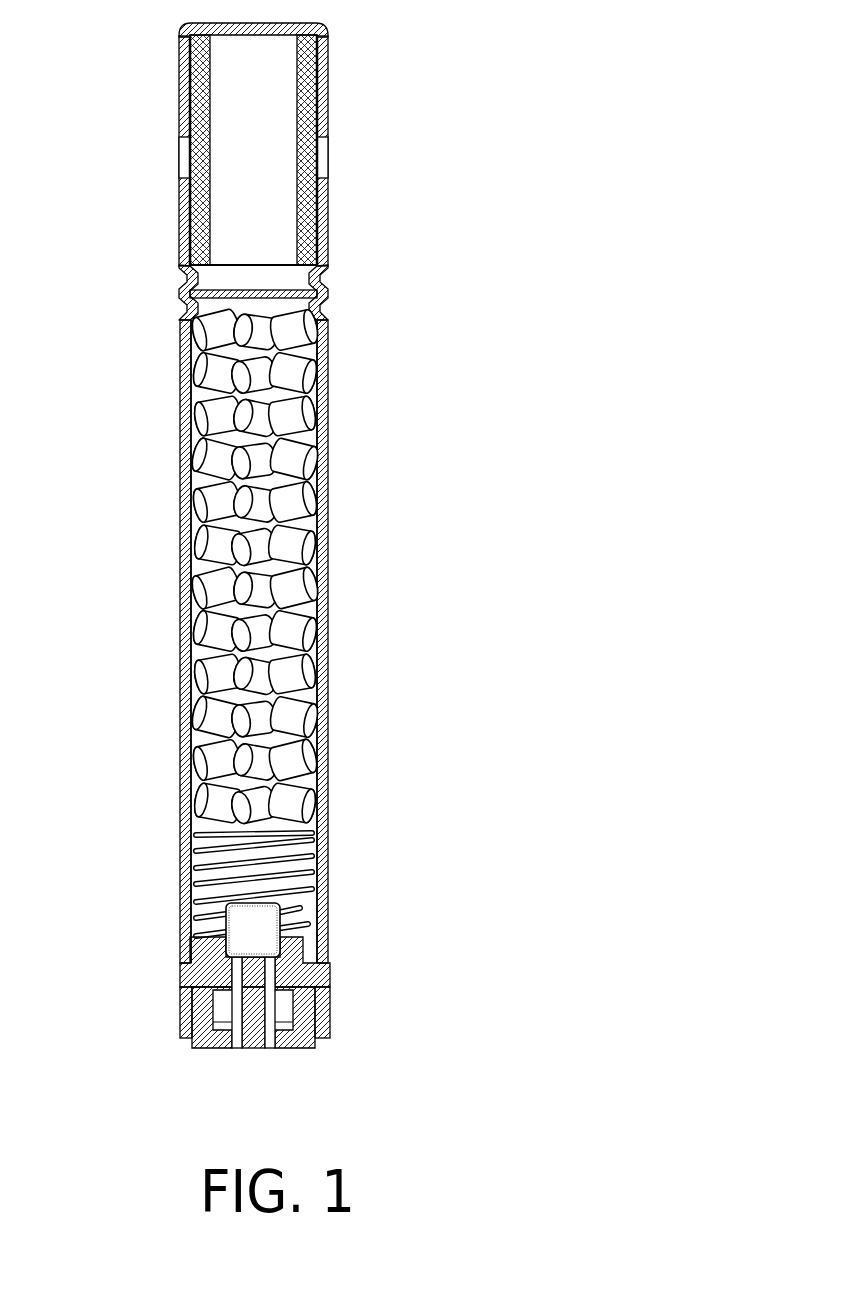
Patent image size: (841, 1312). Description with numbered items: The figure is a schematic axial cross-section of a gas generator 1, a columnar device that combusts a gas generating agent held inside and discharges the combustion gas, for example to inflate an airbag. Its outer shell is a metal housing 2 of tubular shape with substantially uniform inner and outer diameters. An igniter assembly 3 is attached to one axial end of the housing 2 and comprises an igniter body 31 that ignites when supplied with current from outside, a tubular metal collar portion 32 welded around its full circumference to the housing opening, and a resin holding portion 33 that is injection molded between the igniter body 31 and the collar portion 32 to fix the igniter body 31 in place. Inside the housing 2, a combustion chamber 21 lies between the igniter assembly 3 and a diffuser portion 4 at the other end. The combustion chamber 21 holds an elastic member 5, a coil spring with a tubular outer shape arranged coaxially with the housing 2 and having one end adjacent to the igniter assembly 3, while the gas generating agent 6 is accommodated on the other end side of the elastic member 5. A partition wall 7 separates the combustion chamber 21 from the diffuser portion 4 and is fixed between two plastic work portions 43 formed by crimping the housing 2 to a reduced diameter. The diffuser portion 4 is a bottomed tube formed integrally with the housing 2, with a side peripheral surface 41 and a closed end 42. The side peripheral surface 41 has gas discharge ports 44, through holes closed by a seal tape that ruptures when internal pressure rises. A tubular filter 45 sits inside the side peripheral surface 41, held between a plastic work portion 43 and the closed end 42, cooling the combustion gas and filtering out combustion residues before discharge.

The gas generator 1 is at (118, 112).
The housing 2 is at (207, 641).
The combustion chamber 21 is at (196, 487).
The igniter assembly 3 is at (421, 954).
The igniter body 31 is at (305, 920).
The collar portion 32 is at (325, 975).
The holding portion 33 is at (316, 1048).
The diffuser portion 4 is at (462, 31).
The side peripheral surface 41 is at (328, 208).
The closed end 42 is at (290, 25).
The plastic work portion 43 is at (324, 276).
The gas discharge port 44 is at (322, 158).
The filter 45 is at (313, 86).
The elastic member 5 is at (300, 885).
The gas generating agent 6 is at (290, 680).
The partition wall 7 is at (322, 316).